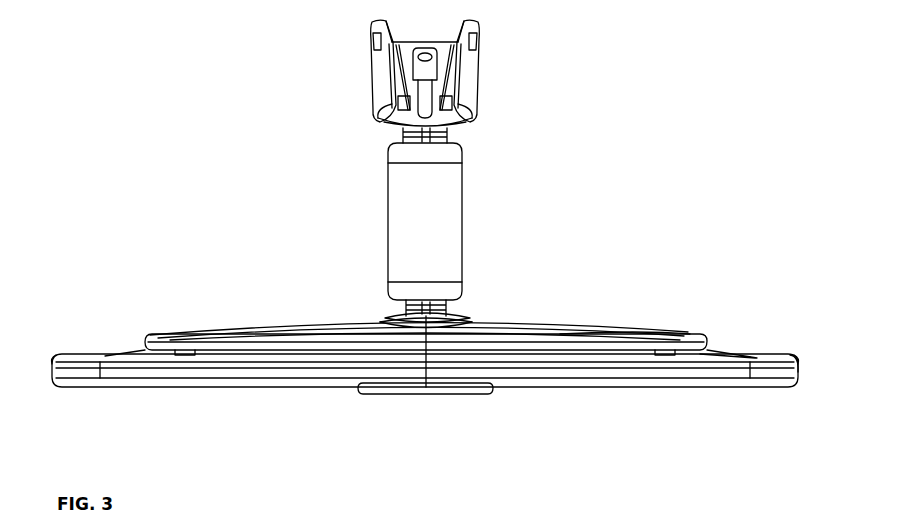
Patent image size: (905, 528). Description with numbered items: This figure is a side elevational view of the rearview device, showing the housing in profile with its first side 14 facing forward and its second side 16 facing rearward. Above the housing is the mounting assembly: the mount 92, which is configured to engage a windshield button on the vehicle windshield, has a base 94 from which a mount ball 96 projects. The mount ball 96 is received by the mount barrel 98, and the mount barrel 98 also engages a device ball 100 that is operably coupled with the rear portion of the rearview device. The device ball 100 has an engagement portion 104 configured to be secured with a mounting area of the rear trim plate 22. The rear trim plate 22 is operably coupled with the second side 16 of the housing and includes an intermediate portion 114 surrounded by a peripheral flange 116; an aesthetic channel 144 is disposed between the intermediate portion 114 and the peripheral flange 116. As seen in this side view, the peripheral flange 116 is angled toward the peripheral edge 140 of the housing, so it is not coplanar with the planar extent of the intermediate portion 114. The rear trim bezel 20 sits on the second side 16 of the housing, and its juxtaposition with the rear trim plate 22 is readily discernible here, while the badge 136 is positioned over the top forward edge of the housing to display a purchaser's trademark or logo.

The first side 14 is at (784, 385).
The second side 16 is at (810, 410).
The rear trim bezel 20 is at (768, 360).
The rear trim plate 22 is at (633, 335).
The mount 92 is at (385, 60).
The base 94 is at (474, 73).
The mount ball 96 is at (445, 127).
The mount barrel 98 is at (448, 206).
The device ball 100 is at (385, 305).
The engagement portion 104 is at (480, 305).
The intermediate portion 114 is at (565, 330).
The peripheral flange 116 is at (686, 345).
The badge 136 is at (412, 390).
The peripheral edge 140 is at (57, 377).
The aesthetic channel 144 is at (178, 333).